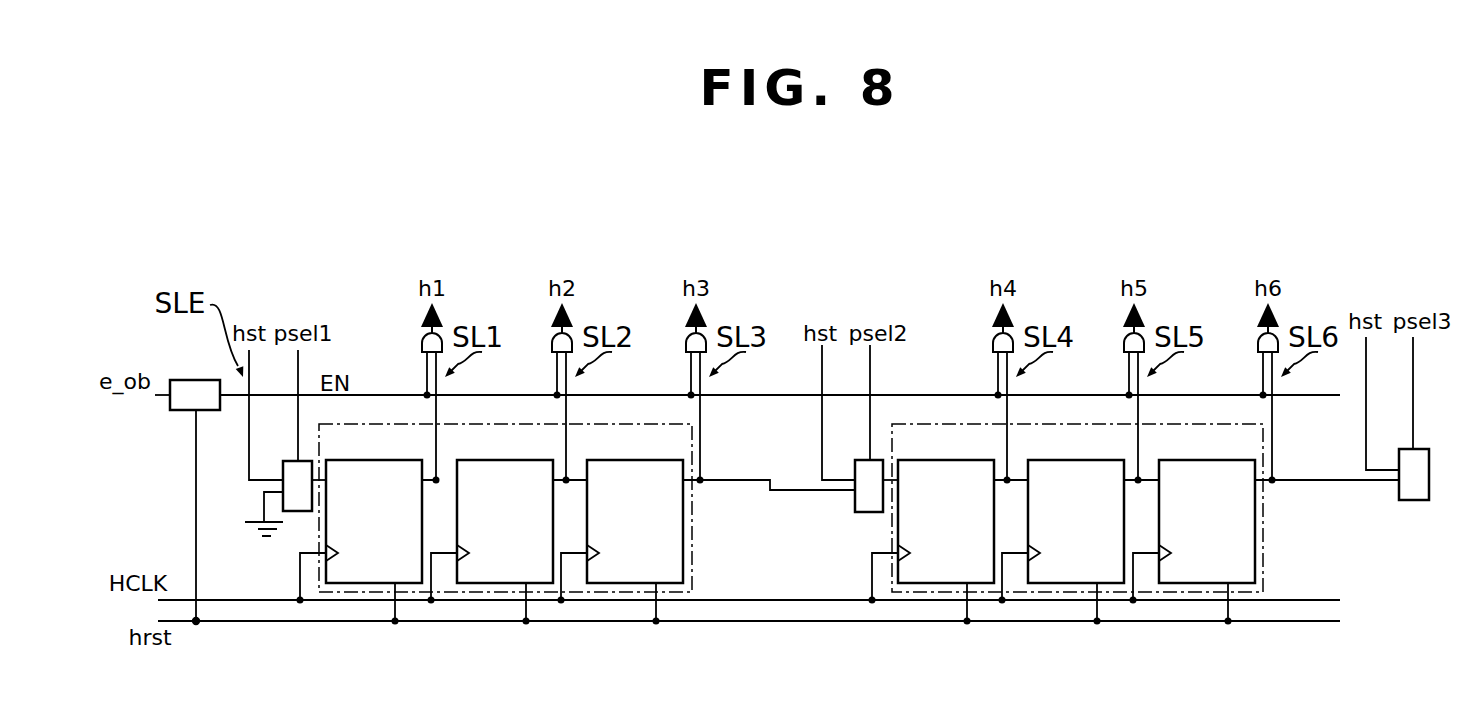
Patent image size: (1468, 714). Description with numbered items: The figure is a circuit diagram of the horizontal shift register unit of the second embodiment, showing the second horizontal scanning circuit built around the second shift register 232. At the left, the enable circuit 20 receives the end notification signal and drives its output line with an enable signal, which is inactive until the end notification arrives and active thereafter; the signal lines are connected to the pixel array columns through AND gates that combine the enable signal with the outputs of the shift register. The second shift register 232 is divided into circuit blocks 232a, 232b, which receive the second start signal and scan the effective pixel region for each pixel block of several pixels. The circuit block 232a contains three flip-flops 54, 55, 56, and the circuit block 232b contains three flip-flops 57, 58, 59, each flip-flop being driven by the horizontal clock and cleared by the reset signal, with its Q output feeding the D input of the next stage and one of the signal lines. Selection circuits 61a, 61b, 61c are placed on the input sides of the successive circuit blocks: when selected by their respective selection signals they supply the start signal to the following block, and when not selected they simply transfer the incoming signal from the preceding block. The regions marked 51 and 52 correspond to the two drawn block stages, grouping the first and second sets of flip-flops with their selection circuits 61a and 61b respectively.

The enable circuit 20 is at (197, 390).
The second shift register 232 is at (378, 314).
The circuit block 232a is at (380, 424).
The circuit block 232b is at (952, 424).
The first shift register unit 51 is at (495, 522).
The second shift register unit 52 is at (1066, 523).
The flip-flop 54 is at (358, 458).
The flip-flop 55 is at (489, 458).
The flip-flop 56 is at (609, 458).
The flip-flop 57 is at (930, 458).
The flip-flop 58 is at (1060, 458).
The flip-flop 59 is at (1184, 458).
The selection circuit 61a is at (300, 513).
The selection circuit 61b is at (870, 513).
The selection circuit 61c is at (1417, 500).